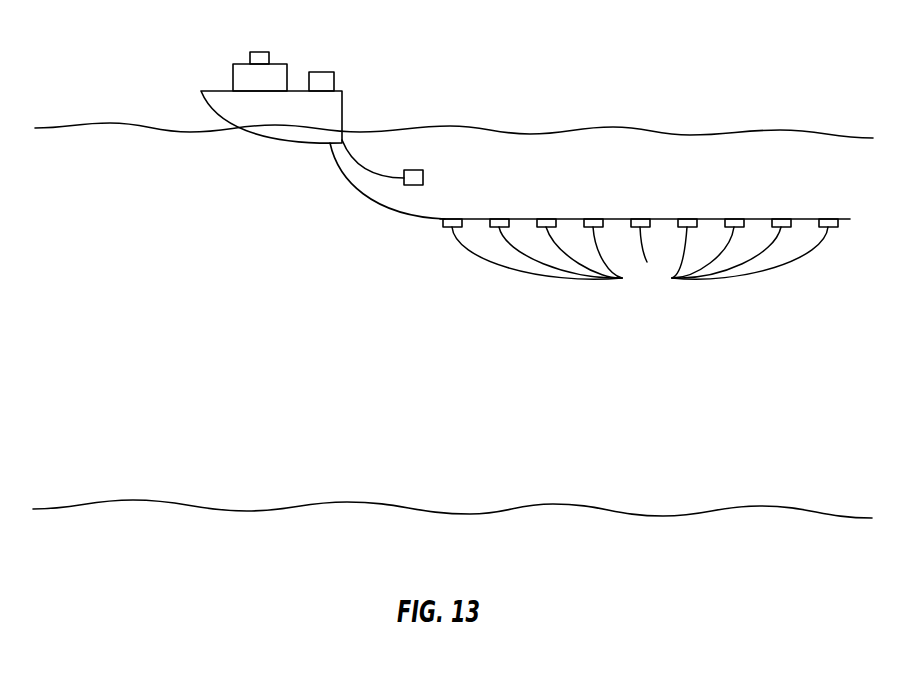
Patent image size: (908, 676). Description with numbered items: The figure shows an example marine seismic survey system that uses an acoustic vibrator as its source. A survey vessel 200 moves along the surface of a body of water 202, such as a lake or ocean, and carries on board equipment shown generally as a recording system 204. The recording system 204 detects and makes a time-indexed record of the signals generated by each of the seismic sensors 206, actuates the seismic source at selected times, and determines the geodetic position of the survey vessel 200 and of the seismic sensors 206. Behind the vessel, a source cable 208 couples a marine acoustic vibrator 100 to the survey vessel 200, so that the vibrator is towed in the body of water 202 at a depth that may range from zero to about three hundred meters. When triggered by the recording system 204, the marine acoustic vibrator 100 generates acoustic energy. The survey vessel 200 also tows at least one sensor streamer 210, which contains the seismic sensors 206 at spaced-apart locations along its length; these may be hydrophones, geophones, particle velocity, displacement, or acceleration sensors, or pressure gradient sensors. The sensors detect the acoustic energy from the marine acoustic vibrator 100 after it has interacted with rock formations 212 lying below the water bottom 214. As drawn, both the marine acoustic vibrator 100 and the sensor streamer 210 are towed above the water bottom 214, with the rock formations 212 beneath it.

The marine acoustic vibrator 100 is at (423, 177).
The survey vessel 200 is at (343, 112).
The body of water 202 is at (228, 232).
The recording system 204 is at (321, 72).
The seismic sensors 206 is at (640, 255).
The source cable 208 is at (386, 171).
The sensor streamer 210 is at (568, 219).
The rock formations 212 is at (785, 541).
The water bottom 214 is at (578, 503).